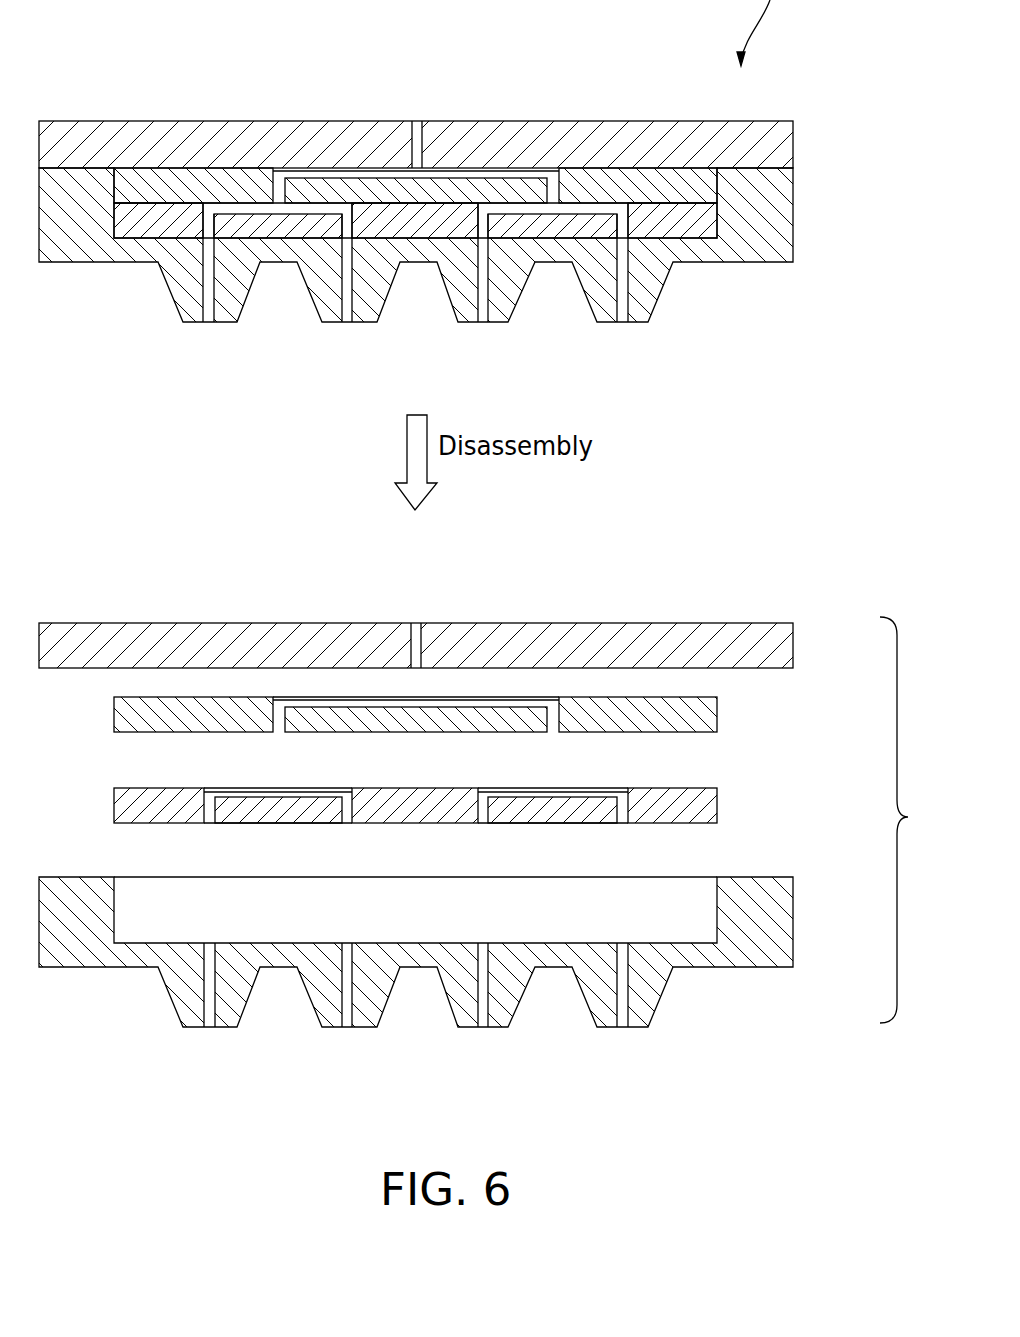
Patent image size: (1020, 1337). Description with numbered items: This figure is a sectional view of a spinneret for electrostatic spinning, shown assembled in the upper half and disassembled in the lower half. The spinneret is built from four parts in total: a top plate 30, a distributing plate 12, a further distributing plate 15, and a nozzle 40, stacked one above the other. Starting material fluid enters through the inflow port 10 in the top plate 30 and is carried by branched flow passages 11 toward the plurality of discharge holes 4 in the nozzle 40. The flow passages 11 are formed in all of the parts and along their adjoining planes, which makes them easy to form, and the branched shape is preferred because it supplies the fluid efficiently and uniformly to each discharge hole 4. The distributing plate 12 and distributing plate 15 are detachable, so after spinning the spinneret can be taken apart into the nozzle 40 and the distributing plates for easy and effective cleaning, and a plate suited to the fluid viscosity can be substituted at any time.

The discharge hole 4 is at (210, 322).
The inflow port 10 is at (420, 121).
The flow passage 11 is at (512, 185).
The distributing plate 12 is at (700, 188).
The distributing plate 15 is at (704, 217).
The top plate 30 is at (262, 121).
The nozzle 40 is at (772, 257).